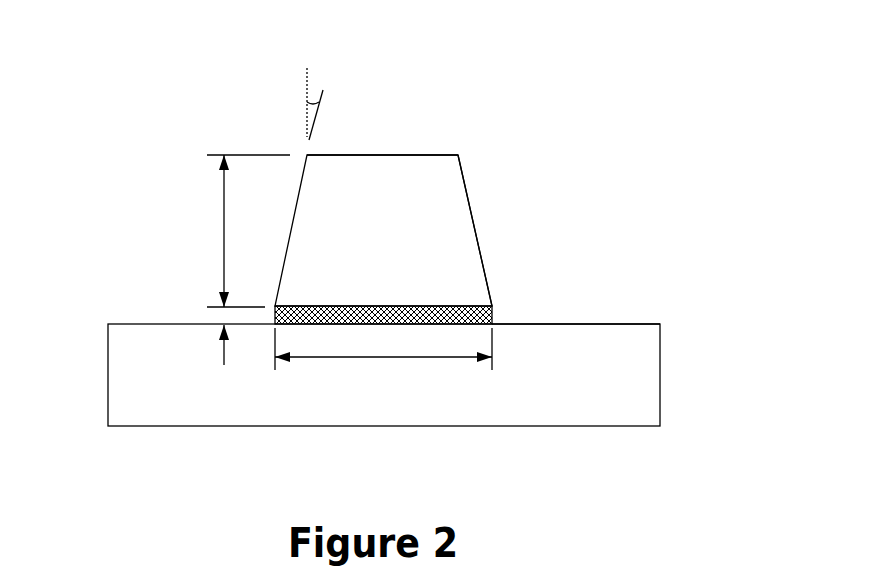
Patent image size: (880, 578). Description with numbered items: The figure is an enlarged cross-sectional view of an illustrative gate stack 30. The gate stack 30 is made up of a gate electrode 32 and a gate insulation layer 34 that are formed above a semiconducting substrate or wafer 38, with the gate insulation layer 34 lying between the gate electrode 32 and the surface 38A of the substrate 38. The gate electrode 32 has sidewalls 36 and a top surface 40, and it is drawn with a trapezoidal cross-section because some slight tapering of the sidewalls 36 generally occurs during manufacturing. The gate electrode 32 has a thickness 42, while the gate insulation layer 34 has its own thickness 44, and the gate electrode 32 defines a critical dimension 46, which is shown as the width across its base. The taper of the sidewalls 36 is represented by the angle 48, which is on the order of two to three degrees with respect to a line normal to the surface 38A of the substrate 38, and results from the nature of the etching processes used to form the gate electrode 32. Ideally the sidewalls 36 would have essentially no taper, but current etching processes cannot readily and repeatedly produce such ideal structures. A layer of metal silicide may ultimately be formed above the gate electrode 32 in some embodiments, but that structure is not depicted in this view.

The gate stack 30 is at (176, 112).
The gate electrode 32 is at (445, 195).
The gate insulation layer 34 is at (493, 303).
The sidewalls 36 is at (475, 217).
The semiconducting substrate 38 is at (627, 397).
The surface of the substrate 38A is at (607, 321).
The top surface 40 is at (367, 152).
The thickness of the gate electrode 42 is at (224, 231).
The thickness of the gate insulation layer 44 is at (224, 365).
The critical dimension 46 is at (403, 357).
The angle 48 is at (317, 102).